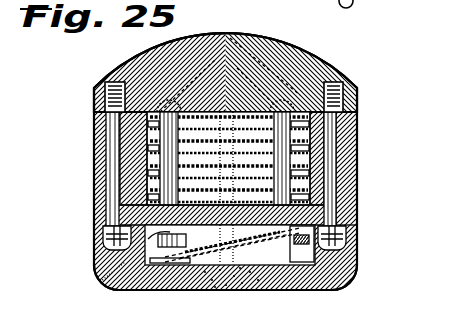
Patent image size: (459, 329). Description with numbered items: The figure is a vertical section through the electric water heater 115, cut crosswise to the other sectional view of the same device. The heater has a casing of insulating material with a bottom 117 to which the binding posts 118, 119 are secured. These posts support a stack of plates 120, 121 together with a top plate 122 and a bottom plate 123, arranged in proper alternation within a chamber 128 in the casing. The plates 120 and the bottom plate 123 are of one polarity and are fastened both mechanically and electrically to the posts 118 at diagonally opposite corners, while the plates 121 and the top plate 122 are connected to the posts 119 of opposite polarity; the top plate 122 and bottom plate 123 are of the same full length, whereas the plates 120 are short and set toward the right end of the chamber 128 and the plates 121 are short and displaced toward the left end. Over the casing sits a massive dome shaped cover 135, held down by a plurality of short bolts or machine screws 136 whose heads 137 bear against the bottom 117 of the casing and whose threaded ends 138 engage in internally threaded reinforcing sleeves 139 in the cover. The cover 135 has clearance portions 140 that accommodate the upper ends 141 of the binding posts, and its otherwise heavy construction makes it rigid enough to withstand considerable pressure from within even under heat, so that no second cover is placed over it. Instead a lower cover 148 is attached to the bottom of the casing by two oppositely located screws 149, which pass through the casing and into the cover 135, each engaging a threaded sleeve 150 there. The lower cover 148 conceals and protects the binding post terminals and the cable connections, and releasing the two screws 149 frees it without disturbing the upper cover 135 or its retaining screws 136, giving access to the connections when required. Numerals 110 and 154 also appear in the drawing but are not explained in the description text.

The adjusting screw 110 is at (232, 245).
The heater 115 is at (88, 138).
The bottom 117 is at (302, 247).
The binding posts 118 is at (127, 288).
The binding posts 119 is at (280, 246).
The plates 120 is at (343, 133).
The plates 121 is at (146, 142).
The top plate 122 is at (267, 145).
The bottom plate 123 is at (307, 206).
The chamber 128 is at (155, 147).
The cover 135 is at (305, 53).
The bolts or machine screws 136 is at (112, 197).
The heads 137 is at (103, 236).
The threaded ends 138 is at (106, 108).
The reinforcing sleeves 139 is at (112, 82).
The clearance portions 140 is at (283, 107).
The upper ends 141 is at (243, 75).
The cover 148 is at (352, 274).
The screws 149 is at (231, 286).
The threaded sleeve 150 is at (253, 39).
The connector 154 is at (346, 6).